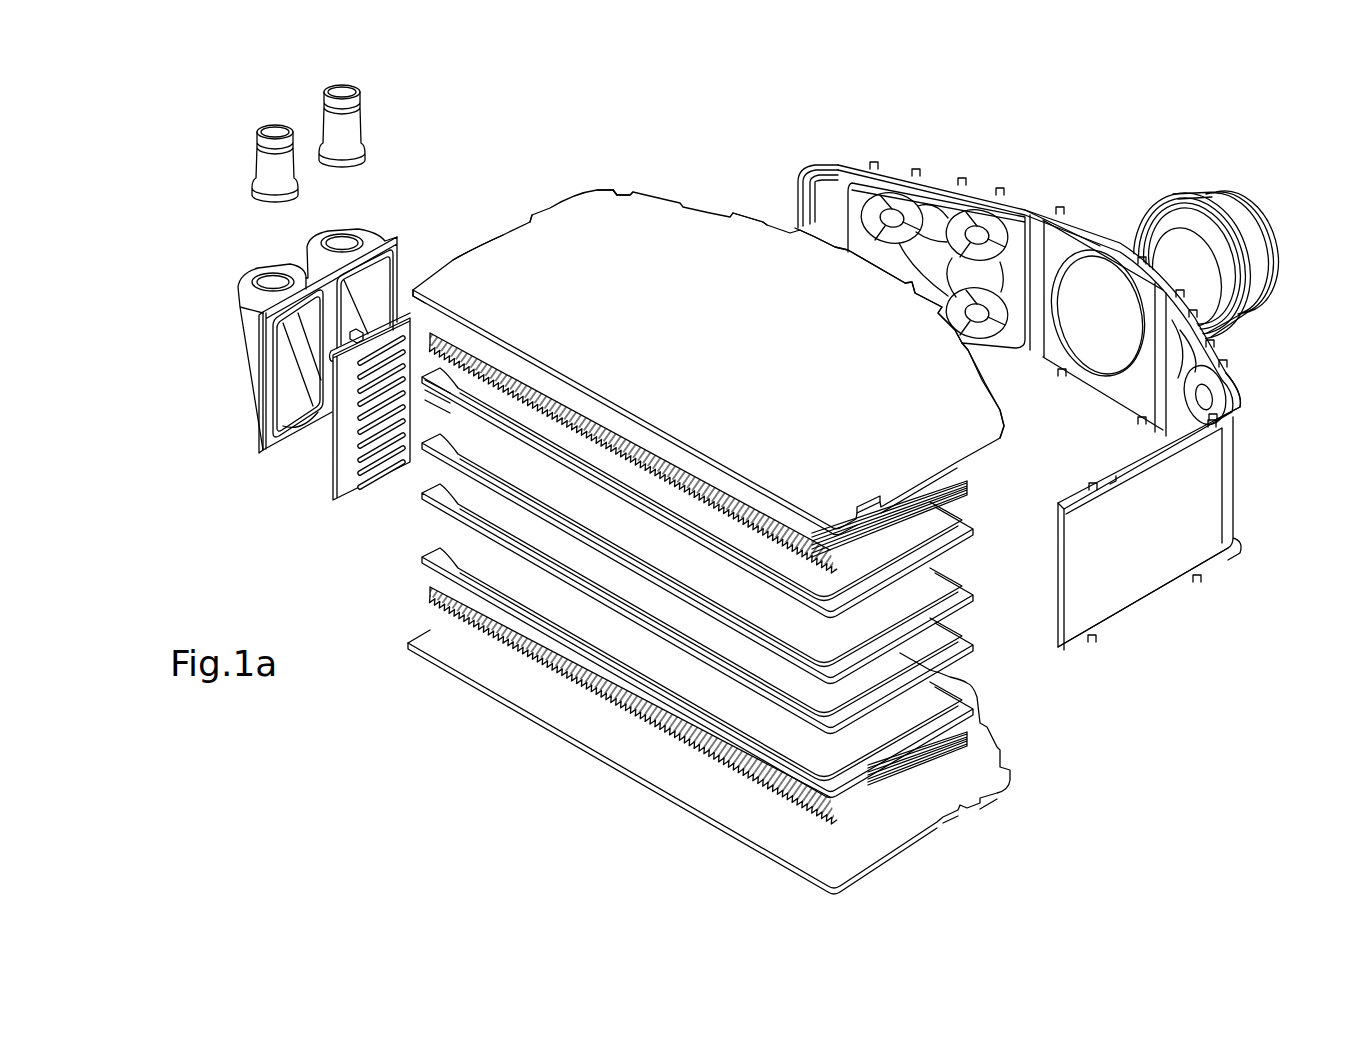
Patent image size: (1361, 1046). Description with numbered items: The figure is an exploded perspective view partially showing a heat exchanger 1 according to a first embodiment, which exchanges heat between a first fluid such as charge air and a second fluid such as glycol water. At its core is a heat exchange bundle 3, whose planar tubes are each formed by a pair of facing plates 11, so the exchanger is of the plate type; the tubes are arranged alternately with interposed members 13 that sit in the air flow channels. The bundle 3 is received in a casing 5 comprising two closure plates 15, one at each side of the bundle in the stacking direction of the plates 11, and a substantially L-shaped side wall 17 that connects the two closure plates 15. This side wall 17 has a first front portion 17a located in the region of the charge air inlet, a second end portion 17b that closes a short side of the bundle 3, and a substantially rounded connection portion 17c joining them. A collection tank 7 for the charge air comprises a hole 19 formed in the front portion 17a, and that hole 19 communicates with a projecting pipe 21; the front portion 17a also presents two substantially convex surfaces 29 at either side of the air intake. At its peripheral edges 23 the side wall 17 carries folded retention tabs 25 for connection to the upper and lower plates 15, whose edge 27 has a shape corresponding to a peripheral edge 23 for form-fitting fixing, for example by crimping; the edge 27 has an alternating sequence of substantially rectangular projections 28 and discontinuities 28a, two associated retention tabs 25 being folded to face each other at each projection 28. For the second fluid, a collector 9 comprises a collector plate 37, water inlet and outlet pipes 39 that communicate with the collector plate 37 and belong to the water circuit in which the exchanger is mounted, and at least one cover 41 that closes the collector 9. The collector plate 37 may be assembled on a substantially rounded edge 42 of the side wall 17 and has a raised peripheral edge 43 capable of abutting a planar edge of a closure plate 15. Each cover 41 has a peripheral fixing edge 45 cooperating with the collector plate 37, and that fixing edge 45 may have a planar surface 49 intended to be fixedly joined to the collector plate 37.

The heat exchanger 1 is at (655, 100).
The heat exchange bundle 3 is at (603, 783).
The casing 5 is at (1258, 490).
The collection tank 7 is at (1229, 185).
The collector 9 is at (230, 258).
The plates 11 is at (437, 554).
The interposed members 13 is at (430, 594).
The closure plates 15 is at (598, 222).
The side wall 17 is at (1020, 140).
The first front portion 17a is at (1060, 193).
The second end portion 17b is at (1172, 630).
The connection portion 17c is at (1242, 418).
The hole 19 is at (1093, 270).
The pipe 21 is at (1248, 256).
The peripheral edges 23 is at (932, 186).
The retention tabs 25 is at (907, 170).
The edge 27 is at (668, 186).
The projections 28 is at (491, 240).
The discontinuities 28a is at (540, 214).
The convex surfaces 29 is at (1215, 352).
The collector plate 37 is at (348, 472).
The water inlet and outlet pipes 39 is at (268, 167).
The cover 41 is at (393, 235).
The rounded edge 42 is at (830, 174).
The raised peripheral edge 43 is at (410, 300).
The peripheral fixing edge 45 is at (258, 310).
The planar surface 49 is at (262, 346).